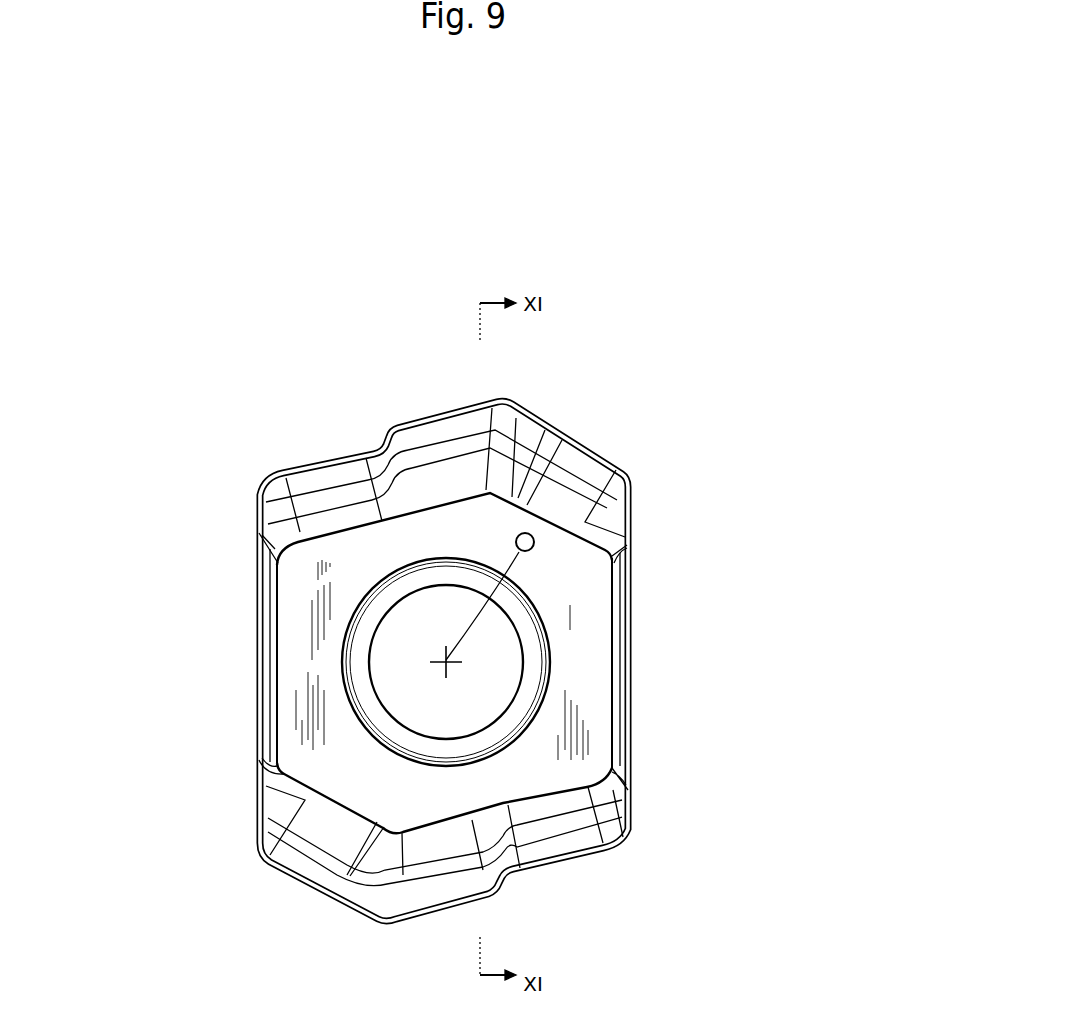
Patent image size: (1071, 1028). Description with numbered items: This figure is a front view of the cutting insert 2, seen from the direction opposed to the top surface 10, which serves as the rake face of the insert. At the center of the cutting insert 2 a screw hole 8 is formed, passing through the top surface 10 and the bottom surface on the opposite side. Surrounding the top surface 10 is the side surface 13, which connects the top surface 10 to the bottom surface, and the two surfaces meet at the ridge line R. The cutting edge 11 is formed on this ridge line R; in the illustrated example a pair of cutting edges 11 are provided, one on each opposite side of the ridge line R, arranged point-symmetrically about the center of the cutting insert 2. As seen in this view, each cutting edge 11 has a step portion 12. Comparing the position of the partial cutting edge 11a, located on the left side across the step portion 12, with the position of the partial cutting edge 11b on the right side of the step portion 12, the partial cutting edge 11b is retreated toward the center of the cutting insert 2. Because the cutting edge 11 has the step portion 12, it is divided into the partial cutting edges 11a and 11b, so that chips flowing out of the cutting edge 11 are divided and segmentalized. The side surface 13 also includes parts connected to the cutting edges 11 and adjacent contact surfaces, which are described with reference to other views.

The cutting insert 2 is at (655, 415).
The screw hole 8 is at (377, 695).
The top surface 10 is at (321, 700).
The cutting edge 11 is at (478, 640).
The partial cutting edge 11a is at (468, 435).
The partial cutting edge 11b is at (298, 466).
The step portion 12 is at (382, 446).
The side surface 13 is at (257, 807).
The ridge line R is at (257, 722).